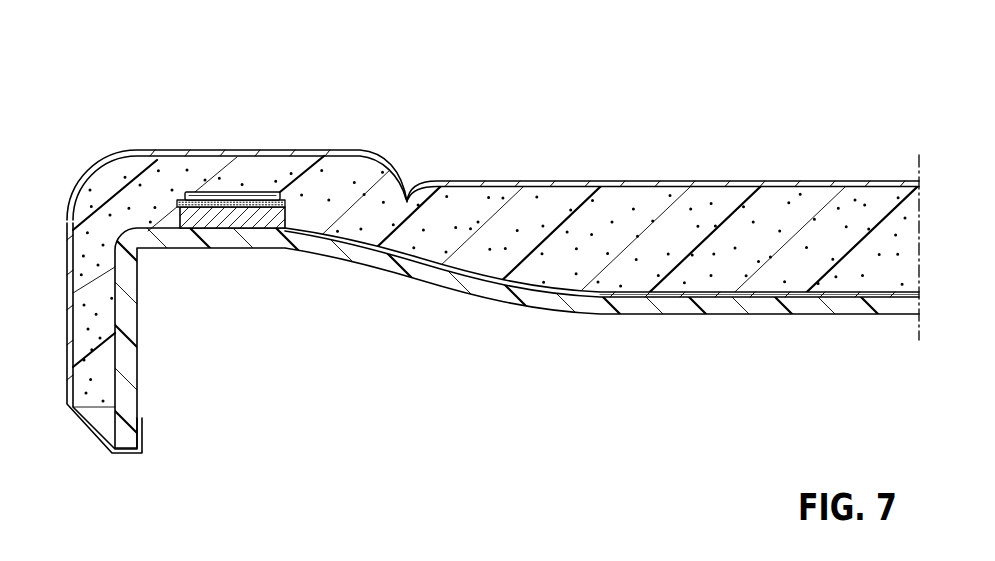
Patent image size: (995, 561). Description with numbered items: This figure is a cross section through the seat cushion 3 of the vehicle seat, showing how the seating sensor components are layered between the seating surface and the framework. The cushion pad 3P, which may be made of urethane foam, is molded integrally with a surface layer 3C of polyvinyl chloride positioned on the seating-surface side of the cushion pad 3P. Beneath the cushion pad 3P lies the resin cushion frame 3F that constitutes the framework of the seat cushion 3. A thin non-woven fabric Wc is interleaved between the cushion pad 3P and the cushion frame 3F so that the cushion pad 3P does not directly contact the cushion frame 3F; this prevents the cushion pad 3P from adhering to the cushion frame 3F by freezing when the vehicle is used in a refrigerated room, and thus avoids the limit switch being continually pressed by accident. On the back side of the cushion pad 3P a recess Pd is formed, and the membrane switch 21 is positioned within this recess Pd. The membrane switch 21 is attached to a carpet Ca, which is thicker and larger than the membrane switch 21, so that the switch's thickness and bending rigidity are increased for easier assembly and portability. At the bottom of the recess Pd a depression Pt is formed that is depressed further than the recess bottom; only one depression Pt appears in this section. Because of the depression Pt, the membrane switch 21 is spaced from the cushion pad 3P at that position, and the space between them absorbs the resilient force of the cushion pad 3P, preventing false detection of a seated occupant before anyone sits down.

The seat cushion 3 is at (716, 86).
The surface layer 3C is at (598, 181).
The cushion pad 3P is at (681, 205).
The cushion frame 3F is at (573, 302).
The non-woven fabric Wc is at (655, 293).
The carpet Ca is at (233, 218).
The recess Pd is at (281, 203).
The membrane switch 21 is at (198, 193).
The depression Pt is at (230, 198).